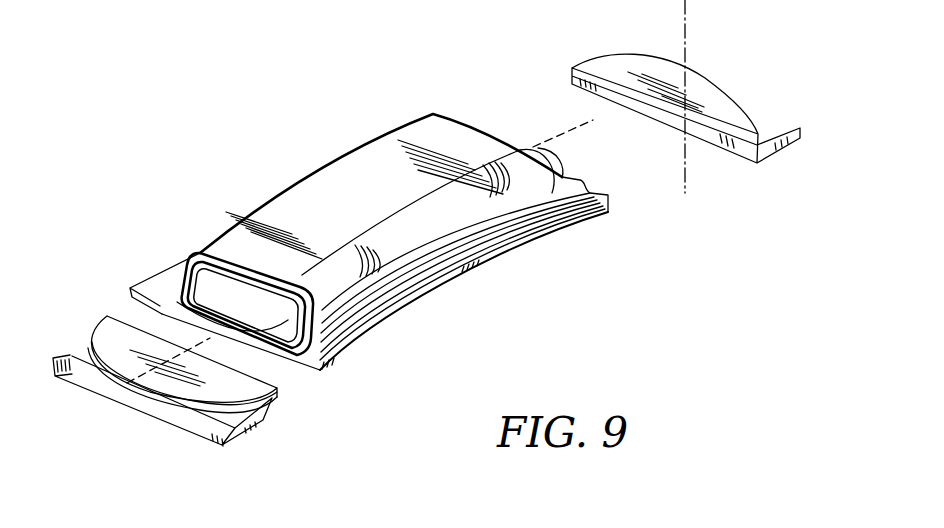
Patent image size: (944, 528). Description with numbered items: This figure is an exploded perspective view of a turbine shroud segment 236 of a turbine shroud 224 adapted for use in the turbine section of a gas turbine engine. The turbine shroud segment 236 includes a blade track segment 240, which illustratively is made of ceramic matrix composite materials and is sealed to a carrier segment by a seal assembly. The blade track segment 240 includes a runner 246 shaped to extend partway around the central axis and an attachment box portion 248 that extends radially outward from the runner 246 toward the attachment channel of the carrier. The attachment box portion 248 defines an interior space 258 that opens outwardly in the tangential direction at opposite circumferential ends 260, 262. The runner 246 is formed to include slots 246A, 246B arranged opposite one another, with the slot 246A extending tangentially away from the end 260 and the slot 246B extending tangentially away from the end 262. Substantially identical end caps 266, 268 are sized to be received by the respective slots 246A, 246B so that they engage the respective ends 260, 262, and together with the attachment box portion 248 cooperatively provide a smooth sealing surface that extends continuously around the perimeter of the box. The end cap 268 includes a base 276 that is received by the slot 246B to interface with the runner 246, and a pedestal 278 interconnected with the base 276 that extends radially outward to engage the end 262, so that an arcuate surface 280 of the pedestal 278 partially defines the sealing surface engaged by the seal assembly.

The turbine shroud 224 is at (593, 43).
The turbine shroud segment 236 is at (480, 112).
The blade track segment 240 is at (522, 182).
The runner 246 is at (483, 267).
The slot 246A is at (572, 173).
The slot 246B is at (190, 317).
The attachment box portion 248 is at (265, 233).
The interior space 258 is at (197, 270).
The circumferential end 260 is at (514, 146).
The circumferential end 262 is at (297, 322).
The end cap 266 is at (722, 58).
The end cap 268 is at (183, 422).
The base 276 is at (103, 385).
The pedestal 278 is at (143, 392).
The arcuate surface 280 is at (212, 413).